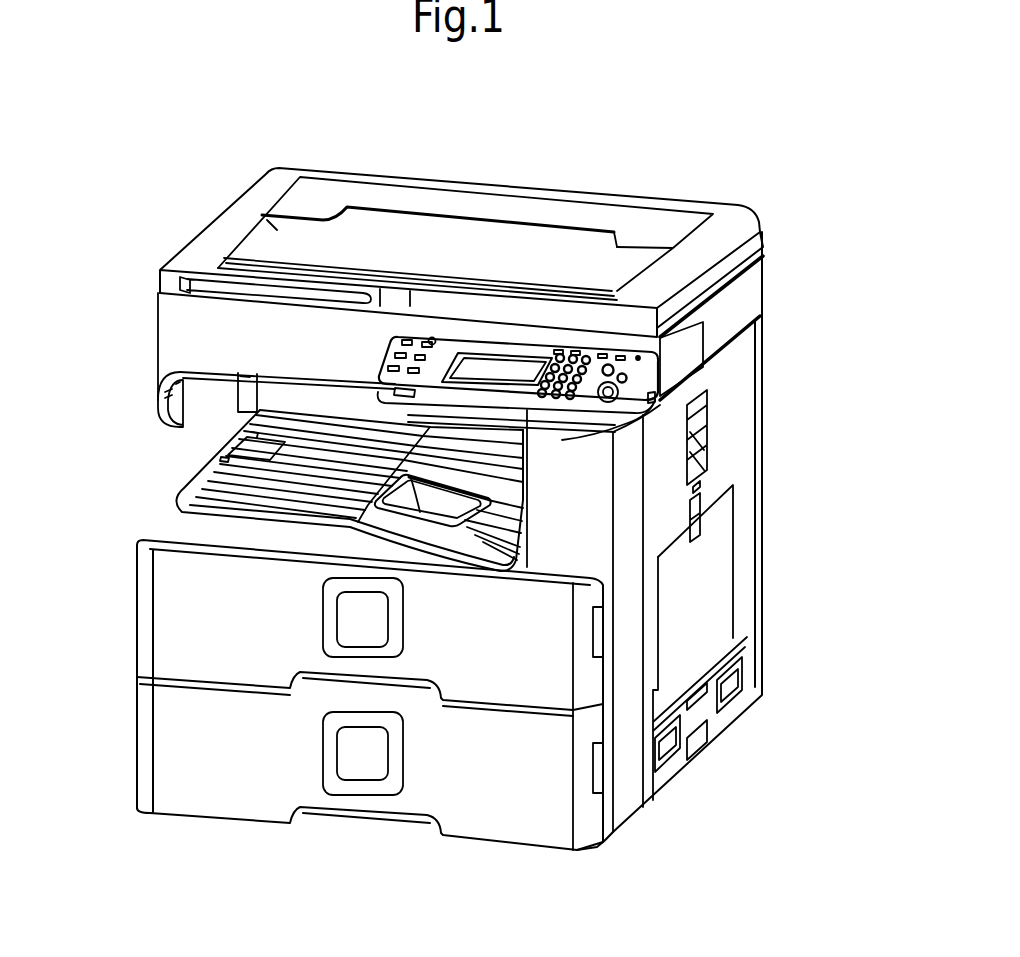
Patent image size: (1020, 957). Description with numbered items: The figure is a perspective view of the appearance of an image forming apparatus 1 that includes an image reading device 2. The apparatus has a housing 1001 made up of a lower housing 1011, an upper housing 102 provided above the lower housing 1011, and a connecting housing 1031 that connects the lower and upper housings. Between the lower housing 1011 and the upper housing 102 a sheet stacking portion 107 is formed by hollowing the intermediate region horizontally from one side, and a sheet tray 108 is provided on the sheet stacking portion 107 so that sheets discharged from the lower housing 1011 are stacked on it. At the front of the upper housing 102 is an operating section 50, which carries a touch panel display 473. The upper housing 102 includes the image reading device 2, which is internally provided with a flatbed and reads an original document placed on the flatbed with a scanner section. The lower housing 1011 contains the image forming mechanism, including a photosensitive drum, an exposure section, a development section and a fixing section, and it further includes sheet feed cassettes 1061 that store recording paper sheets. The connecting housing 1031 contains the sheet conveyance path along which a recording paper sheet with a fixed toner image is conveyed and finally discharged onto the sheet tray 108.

The image forming apparatus 1 is at (782, 212).
The image reading device 2 is at (218, 214).
The operating section 50 is at (441, 350).
The touch panel display 473 is at (480, 372).
The upper housing 102 is at (755, 290).
The housing 1001 is at (763, 360).
The lower housing 1011 is at (745, 563).
The connecting housing 1031 is at (600, 497).
The sheet stacking portion 107 is at (191, 469).
The sheet tray 108 is at (180, 499).
The sheet feed cassettes 1061 is at (163, 603).